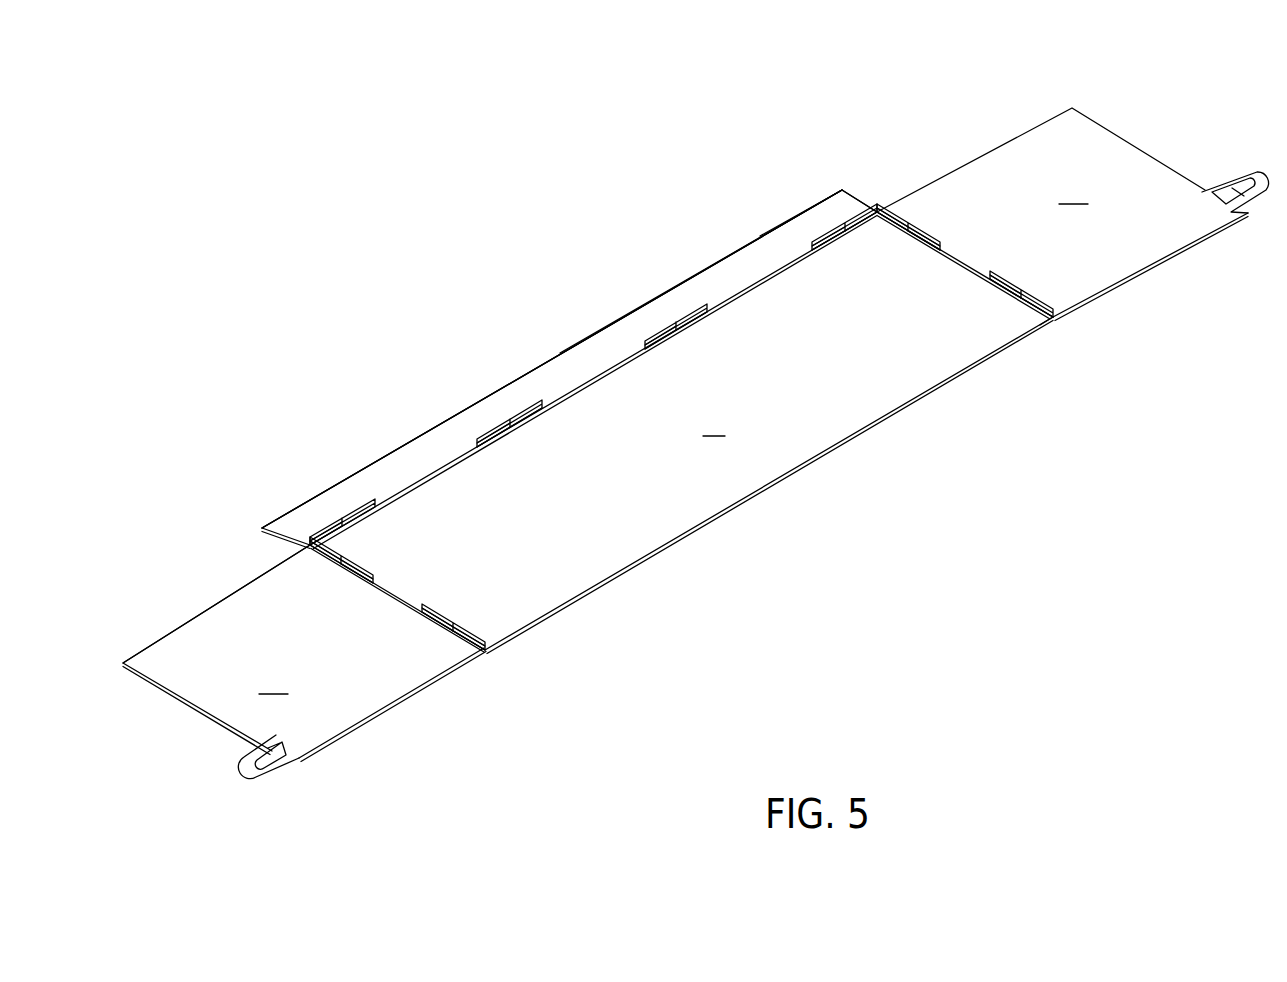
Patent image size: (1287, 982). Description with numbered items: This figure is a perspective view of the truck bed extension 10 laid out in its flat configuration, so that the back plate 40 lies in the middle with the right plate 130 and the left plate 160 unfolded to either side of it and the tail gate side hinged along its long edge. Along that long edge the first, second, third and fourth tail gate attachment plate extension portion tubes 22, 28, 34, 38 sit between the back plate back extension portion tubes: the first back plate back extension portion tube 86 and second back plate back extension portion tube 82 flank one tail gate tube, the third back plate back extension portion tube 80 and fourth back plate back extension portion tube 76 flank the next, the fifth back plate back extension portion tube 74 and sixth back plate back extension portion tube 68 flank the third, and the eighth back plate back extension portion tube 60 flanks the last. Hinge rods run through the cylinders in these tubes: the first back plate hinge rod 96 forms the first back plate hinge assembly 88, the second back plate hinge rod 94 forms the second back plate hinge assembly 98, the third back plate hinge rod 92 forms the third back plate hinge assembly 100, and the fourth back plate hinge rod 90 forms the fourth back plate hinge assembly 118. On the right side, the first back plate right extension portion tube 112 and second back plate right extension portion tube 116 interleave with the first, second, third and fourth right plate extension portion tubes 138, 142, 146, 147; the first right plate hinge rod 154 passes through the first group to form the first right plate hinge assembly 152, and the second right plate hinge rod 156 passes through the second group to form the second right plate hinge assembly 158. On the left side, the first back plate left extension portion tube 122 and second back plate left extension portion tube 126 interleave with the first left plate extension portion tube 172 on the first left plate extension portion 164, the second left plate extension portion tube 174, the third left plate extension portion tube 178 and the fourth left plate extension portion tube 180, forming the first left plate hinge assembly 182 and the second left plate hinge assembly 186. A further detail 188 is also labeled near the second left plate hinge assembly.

The truck bed extension 10 is at (298, 277).
The first tail gate attachment plate extension portion tube 22 is at (347, 514).
The second tail gate attachment plate extension portion tube 28 is at (508, 422).
The third tail gate attachment plate extension portion tube 34 is at (680, 320).
The fourth tail gate attachment plate extension portion tube 38 is at (840, 222).
The back plate 40 is at (372, 512).
The eighth back plate back extension portion tube 60 is at (322, 540).
The sixth back plate back extension portion tube 68 is at (495, 443).
The fifth back plate back extension portion tube 74 is at (541, 426).
The fourth back plate back extension portion tube 76 is at (659, 347).
The third back plate back extension portion tube 80 is at (700, 318).
The second back plate back extension portion tube 82 is at (827, 249).
The first back plate back extension portion tube 86 is at (865, 223).
The first back plate hinge assembly 88 is at (793, 207).
The fourth back plate hinge rod 90 is at (304, 549).
The third back plate hinge rod 92 is at (478, 444).
The second back plate hinge rod 94 is at (648, 349).
The first back plate hinge rod 96 is at (815, 251).
The second back plate hinge assembly 98 is at (621, 302).
The third back plate hinge assembly 100 is at (427, 407).
The first back plate right extension portion tube 112 is at (908, 225).
The second back plate right extension portion tube 116 is at (1020, 302).
The fourth back plate hinge assembly 118 is at (284, 492).
The first back plate left extension portion tube 122 is at (338, 569).
The second back plate left extension portion tube 126 is at (452, 629).
The right plate 130 is at (1073, 214).
The first right plate extension portion tube 138 is at (884, 213).
The second right plate extension portion tube 142 is at (930, 242).
The third right plate extension portion tube 146 is at (990, 280).
The fourth right plate extension portion tube 147 is at (1047, 311).
The first right plate hinge assembly 152 is at (915, 183).
The first right plate hinge rod 154 is at (937, 248).
The second right plate hinge rod 156 is at (1045, 332).
The second right plate hinge assembly 158 is at (1040, 288).
The left plate 160 is at (304, 662).
The first left plate extension portion 164 is at (378, 581).
The first left plate extension portion tube 172 is at (314, 559).
The second left plate extension portion tube 174 is at (358, 580).
The third left plate extension portion tube 178 is at (425, 614).
The fourth left plate extension portion tube 180 is at (463, 646).
The first left plate hinge assembly 182 is at (241, 616).
The second left plate hinge assembly 186 is at (473, 618).
The hinge knuckle 188 is at (481, 645).